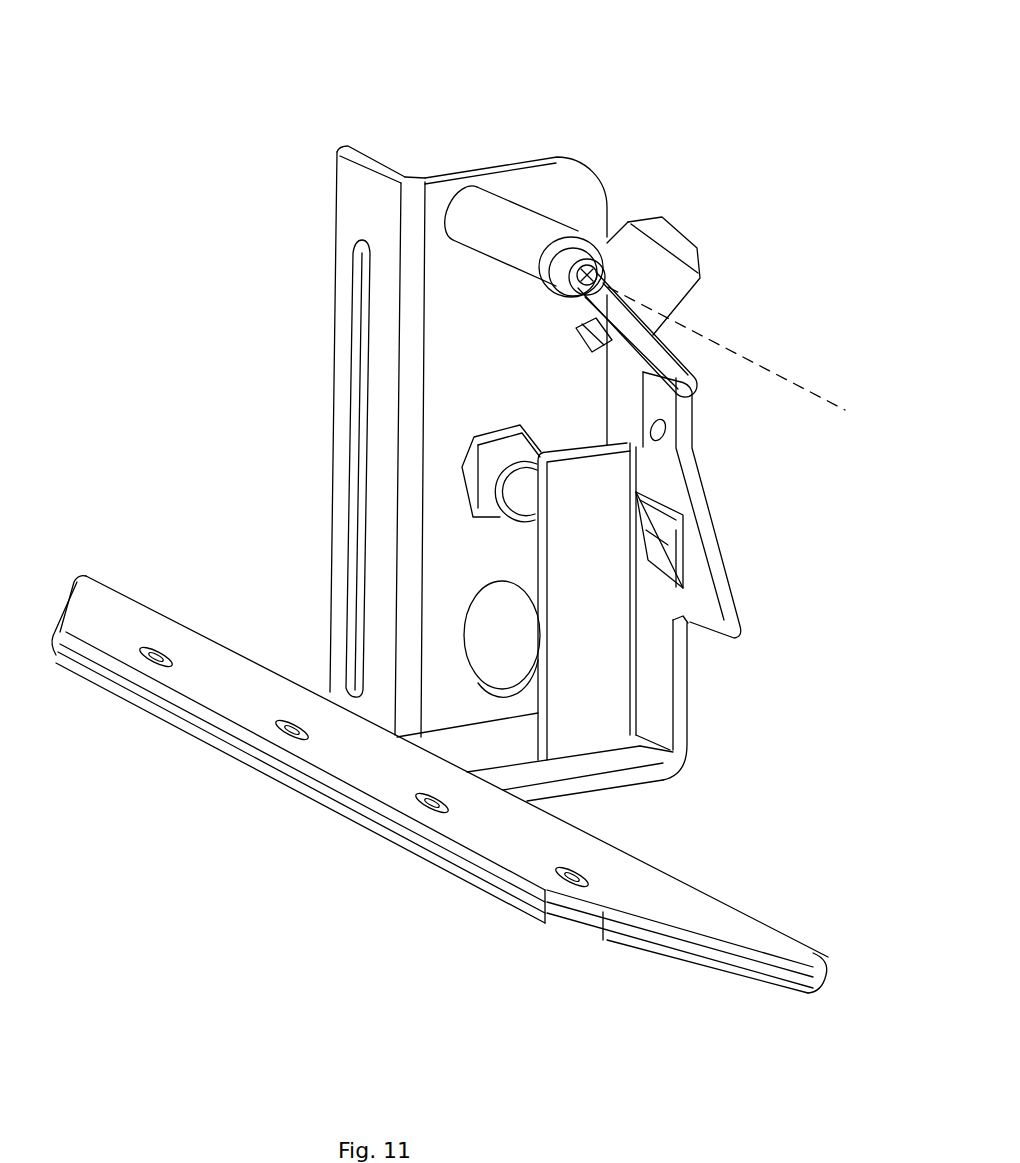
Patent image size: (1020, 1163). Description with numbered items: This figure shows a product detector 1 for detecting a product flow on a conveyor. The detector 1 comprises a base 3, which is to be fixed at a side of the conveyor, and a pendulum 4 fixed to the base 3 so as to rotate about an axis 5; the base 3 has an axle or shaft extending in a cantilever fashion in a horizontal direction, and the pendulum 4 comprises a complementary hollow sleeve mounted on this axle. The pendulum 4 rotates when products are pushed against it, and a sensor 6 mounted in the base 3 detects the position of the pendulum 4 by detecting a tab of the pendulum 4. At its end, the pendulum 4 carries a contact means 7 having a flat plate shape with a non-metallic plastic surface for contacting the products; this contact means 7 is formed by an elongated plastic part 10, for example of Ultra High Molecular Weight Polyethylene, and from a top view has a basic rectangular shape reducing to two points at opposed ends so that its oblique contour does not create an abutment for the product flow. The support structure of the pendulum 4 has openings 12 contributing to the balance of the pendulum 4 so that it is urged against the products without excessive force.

The detector 1 is at (776, 137).
The base 3 is at (560, 192).
The pendulum 4 is at (698, 437).
The axis 5 is at (804, 365).
The sensor 6 is at (502, 487).
The contact means 7 is at (135, 852).
The elongated plastic part 10 is at (650, 898).
The openings 12 is at (668, 522).